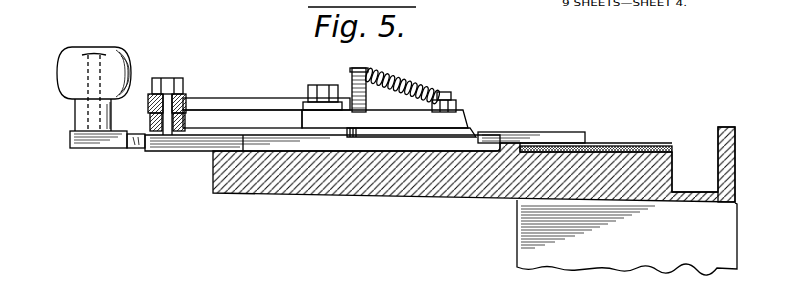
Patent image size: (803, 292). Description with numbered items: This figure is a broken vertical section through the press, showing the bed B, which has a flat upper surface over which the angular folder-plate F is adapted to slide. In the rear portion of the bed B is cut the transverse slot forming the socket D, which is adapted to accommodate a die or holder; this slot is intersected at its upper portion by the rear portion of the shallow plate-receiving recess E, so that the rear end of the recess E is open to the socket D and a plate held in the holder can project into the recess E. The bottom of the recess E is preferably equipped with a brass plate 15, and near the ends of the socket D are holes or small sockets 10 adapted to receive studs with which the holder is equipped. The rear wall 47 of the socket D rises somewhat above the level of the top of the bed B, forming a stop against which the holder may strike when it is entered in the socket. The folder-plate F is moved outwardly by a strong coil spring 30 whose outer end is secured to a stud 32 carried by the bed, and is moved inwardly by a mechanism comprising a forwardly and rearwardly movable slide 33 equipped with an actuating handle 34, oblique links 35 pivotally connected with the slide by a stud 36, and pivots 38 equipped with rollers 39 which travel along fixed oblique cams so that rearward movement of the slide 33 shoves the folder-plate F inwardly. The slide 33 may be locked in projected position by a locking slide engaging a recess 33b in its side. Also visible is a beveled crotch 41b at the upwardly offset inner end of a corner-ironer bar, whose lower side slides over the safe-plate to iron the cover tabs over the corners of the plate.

The holes or small sockets 10 is at (688, 208).
The brass plate 15 is at (600, 146).
The coil springs 30 is at (416, 86).
The studs 32 is at (358, 72).
The slide 33 is at (118, 147).
The plate portion 33b is at (138, 147).
The actuating handle 34 is at (125, 62).
The oblique links 35 is at (226, 104).
The stud 36 is at (181, 78).
The pivots 38 is at (322, 85).
The rollers 39 is at (298, 124).
The crotches 41b is at (482, 140).
The rear wall of the socket 47 is at (718, 173).
The bed B is at (486, 192).
The socket D is at (682, 166).
The shallow socket or recess E is at (625, 147).
The folder-plate F is at (540, 136).